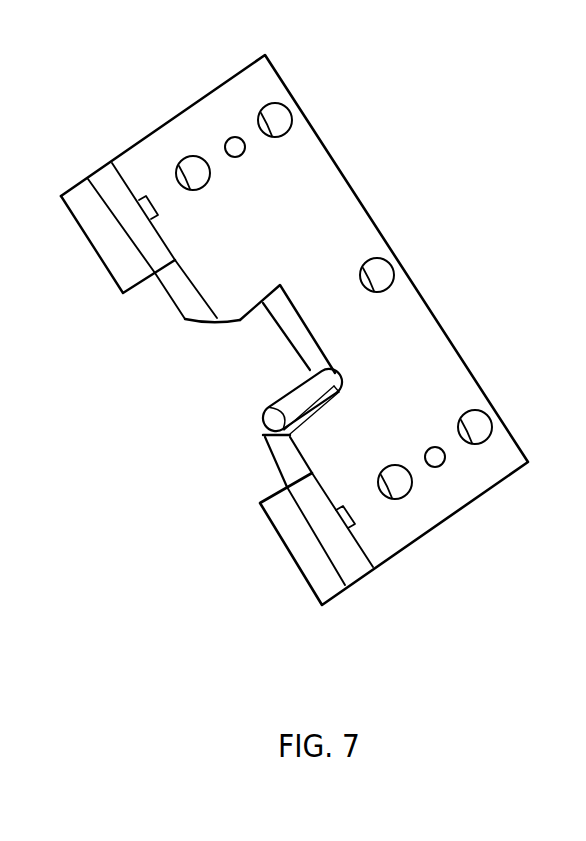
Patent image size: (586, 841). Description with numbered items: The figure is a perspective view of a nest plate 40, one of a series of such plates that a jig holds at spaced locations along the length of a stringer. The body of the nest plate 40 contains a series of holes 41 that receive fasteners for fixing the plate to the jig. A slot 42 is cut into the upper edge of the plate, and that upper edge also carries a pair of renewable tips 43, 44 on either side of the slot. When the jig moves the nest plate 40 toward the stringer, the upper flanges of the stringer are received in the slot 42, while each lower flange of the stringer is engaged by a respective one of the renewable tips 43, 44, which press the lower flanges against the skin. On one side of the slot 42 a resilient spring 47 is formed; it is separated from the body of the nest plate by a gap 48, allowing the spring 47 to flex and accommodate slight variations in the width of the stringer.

The nest plate 40 is at (183, 318).
The holes 41 is at (380, 272).
The slot 42 is at (236, 373).
The renewable tip 43 is at (98, 235).
The renewable tip 44 is at (302, 548).
The resilient spring 47 is at (265, 428).
The gap 48 is at (341, 390).